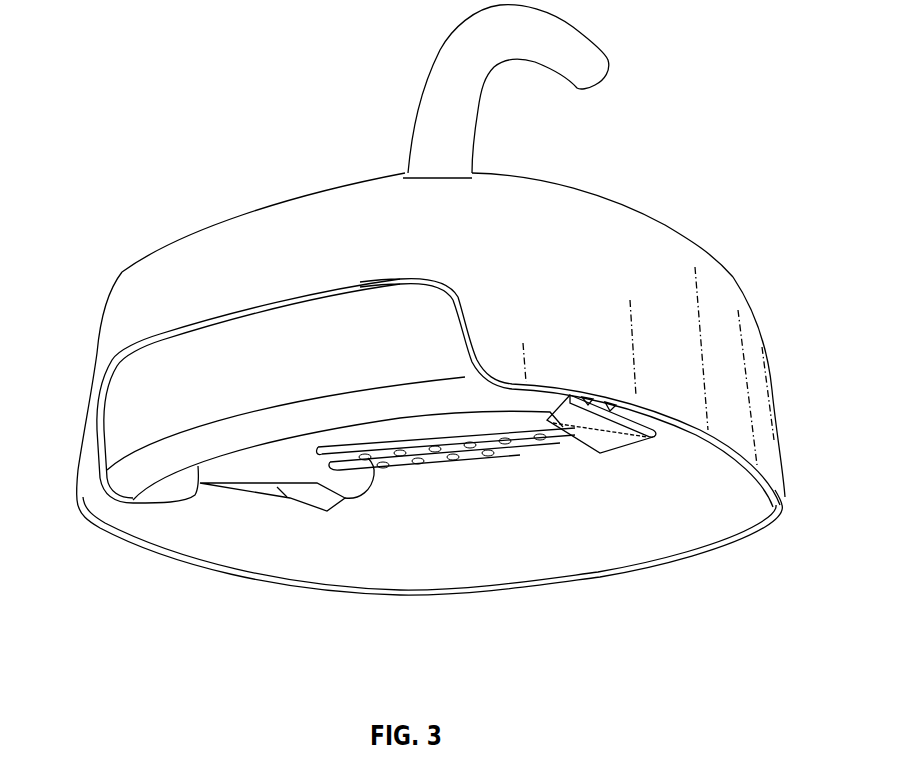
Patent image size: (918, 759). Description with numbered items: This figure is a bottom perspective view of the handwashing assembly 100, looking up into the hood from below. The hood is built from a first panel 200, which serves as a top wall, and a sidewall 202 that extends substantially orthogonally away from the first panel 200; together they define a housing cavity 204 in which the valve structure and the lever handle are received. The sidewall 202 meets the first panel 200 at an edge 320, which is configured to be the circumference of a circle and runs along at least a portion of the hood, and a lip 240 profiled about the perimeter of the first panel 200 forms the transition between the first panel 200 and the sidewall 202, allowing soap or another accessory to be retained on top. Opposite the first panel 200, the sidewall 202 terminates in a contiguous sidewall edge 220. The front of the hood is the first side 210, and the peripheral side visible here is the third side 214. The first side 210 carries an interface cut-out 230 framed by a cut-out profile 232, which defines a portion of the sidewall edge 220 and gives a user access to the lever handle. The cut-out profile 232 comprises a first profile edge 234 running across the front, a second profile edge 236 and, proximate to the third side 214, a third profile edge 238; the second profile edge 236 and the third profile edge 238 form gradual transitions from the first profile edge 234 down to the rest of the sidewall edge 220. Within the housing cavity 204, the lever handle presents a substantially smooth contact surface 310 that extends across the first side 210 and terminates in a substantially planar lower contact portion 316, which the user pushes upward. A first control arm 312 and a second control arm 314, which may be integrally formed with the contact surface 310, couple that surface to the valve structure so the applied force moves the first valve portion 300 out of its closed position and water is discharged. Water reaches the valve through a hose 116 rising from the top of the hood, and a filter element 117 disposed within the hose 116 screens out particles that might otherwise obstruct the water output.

The handwashing assembly 100 is at (179, 43).
The hose 116 is at (452, 34).
The filter element 117 is at (437, 103).
The first panel 200 is at (340, 184).
The sidewall 202 is at (744, 272).
The housing cavity 204 is at (628, 558).
The first side 210 is at (282, 272).
The third side 214 is at (689, 351).
The sidewall edge 220 is at (447, 598).
The interface cut-out 230 is at (81, 401).
The cut-out profile 232 is at (168, 338).
The first profile edge 234 is at (388, 280).
The second profile edge 236 is at (77, 470).
The third profile edge 238 is at (462, 298).
The lip 240 is at (712, 253).
The first valve portion 300 is at (459, 453).
The contact surface 310 is at (294, 377).
The first control arm 312 is at (250, 487).
The second control arm 314 is at (596, 438).
The lower contact portion 316 is at (201, 474).
The edge 320 is at (588, 187).